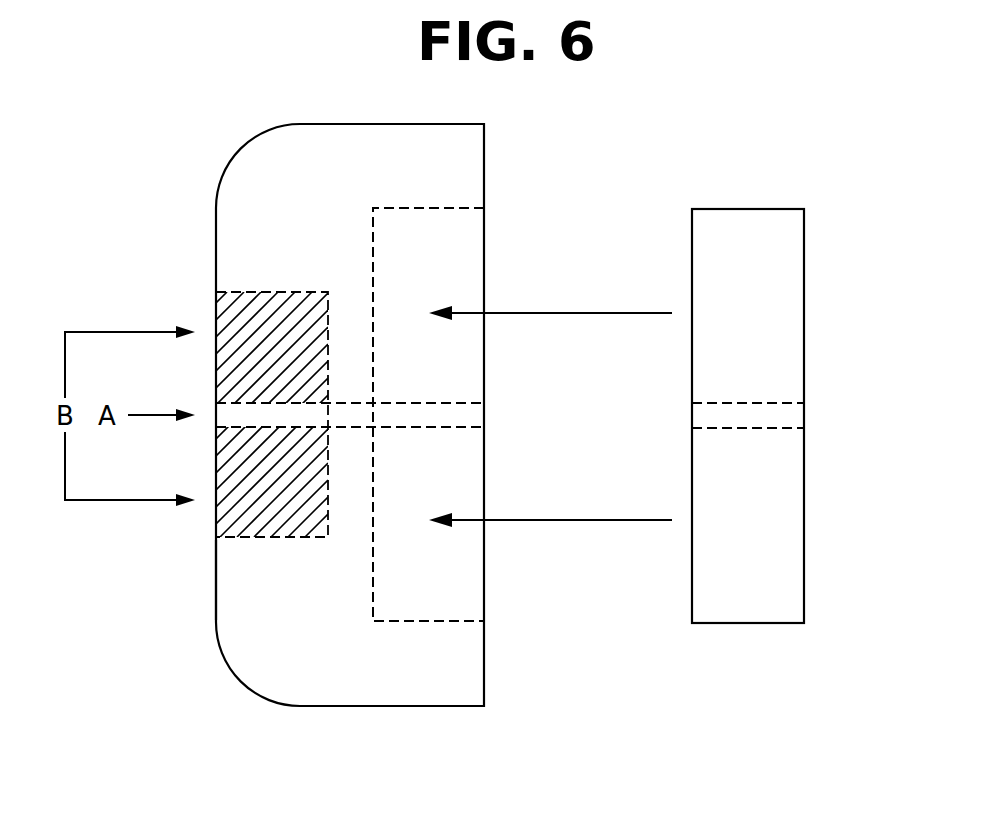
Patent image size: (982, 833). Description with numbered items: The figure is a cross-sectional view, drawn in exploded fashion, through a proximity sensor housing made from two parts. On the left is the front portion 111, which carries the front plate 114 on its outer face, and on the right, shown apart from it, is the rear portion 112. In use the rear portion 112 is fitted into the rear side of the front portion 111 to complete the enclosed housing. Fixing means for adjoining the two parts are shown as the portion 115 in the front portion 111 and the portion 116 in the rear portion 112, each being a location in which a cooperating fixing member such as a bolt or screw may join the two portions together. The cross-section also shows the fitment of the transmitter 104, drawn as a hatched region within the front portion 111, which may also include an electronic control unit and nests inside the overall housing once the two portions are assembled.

The front portion 111 is at (260, 665).
The transmitter 104 is at (267, 295).
The fixing portion 115 is at (248, 408).
The front plate 114 is at (180, 582).
The rear portion 112 is at (743, 228).
The fixing portion 116 is at (758, 412).